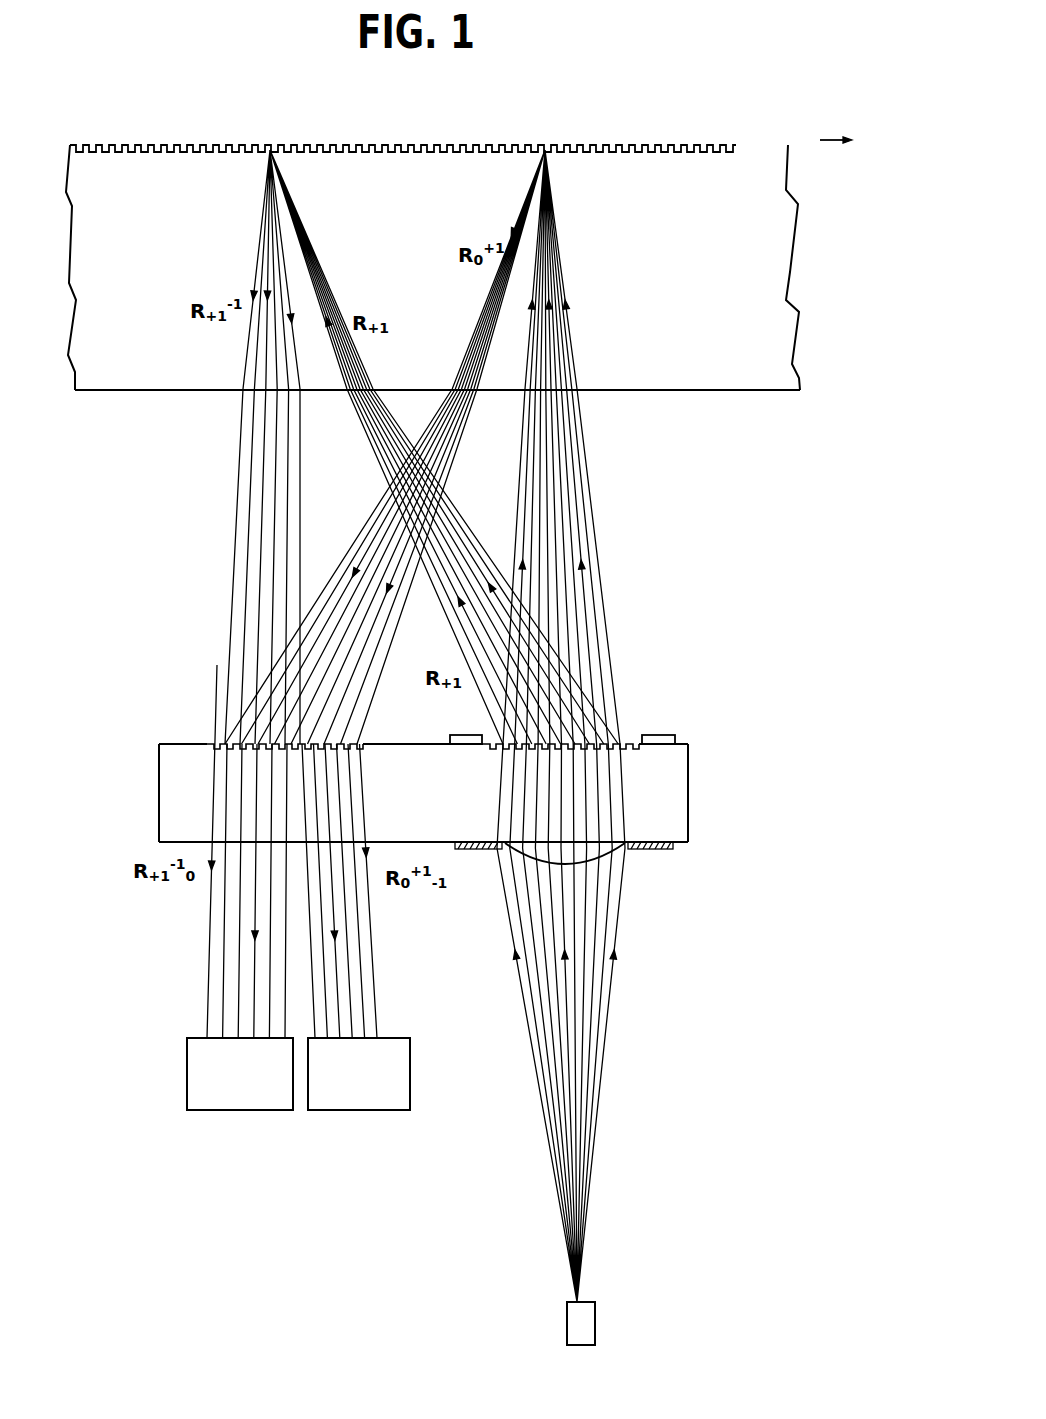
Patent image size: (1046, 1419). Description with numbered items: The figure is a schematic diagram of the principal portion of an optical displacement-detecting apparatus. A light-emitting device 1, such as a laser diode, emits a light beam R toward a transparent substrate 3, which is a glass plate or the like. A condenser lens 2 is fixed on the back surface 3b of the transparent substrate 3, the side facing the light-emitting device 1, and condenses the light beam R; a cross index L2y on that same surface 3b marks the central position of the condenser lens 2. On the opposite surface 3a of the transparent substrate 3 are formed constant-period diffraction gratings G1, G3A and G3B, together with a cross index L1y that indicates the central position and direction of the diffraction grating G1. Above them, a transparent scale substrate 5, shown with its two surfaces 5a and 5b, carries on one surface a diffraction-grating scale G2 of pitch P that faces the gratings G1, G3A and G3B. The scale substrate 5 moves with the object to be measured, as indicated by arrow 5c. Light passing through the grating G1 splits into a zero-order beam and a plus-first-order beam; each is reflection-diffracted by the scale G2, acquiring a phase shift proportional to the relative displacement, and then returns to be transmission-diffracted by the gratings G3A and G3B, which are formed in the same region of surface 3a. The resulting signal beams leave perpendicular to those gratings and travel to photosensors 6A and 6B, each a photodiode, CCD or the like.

The light-emitting device 1 is at (597, 1325).
The condenser lens 2 is at (617, 847).
The transparent substrate 3 is at (420, 793).
The surface of transparent substrate 3a is at (378, 747).
The back surface of transparent substrate 3b is at (687, 847).
The scale substrate 5 is at (455, 272).
The lower surface of scale 5a is at (748, 392).
The upper surface of scale 5b is at (431, 122).
The arrow 5c is at (833, 150).
The photosensor 6A is at (370, 1112).
The photosensor 6B is at (235, 1112).
The diffraction grating G1 is at (626, 740).
The diffraction-grating scale G2 is at (668, 145).
The diffraction grating G3A is at (310, 747).
The diffraction grating G3B is at (245, 743).
The cross index L1y is at (680, 740).
The cross index L2y is at (682, 856).
The light beam R is at (600, 1148).